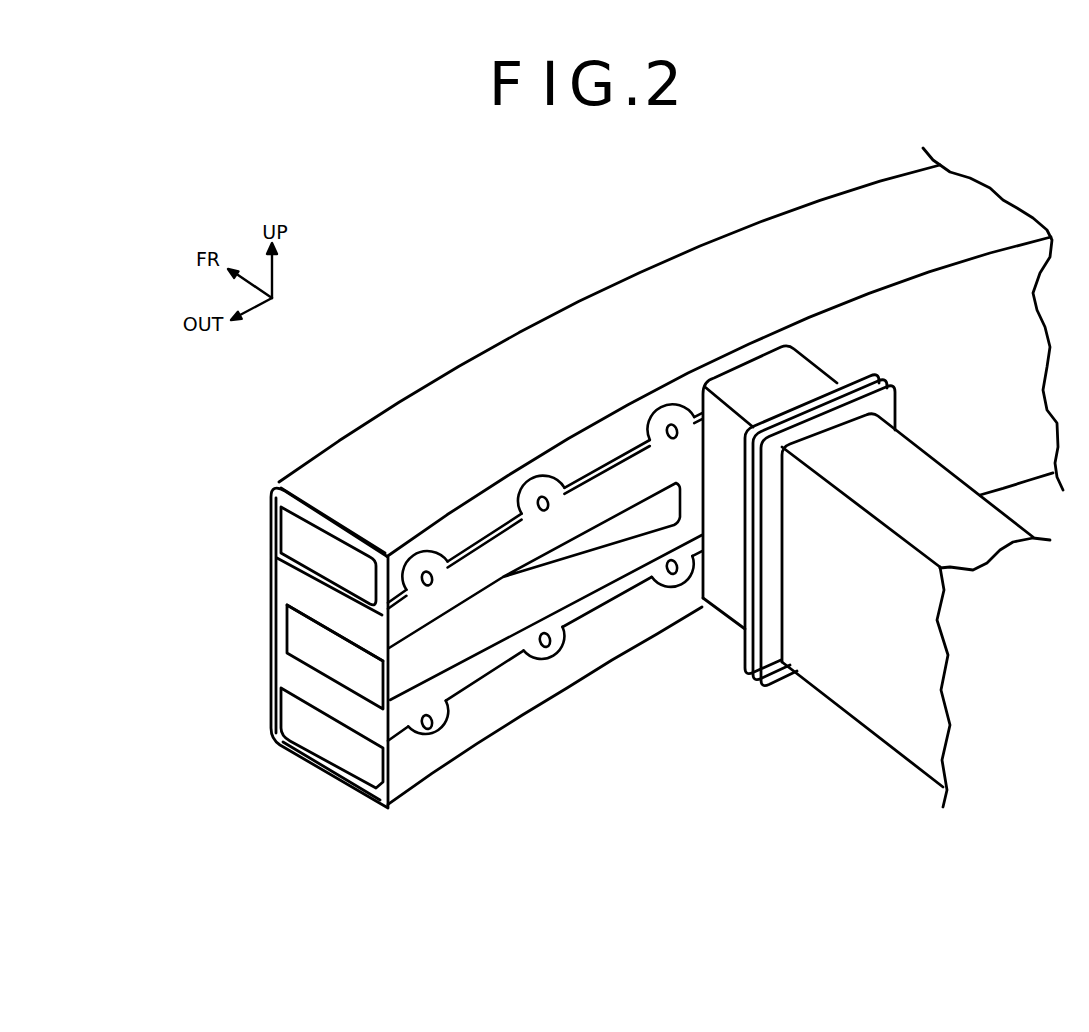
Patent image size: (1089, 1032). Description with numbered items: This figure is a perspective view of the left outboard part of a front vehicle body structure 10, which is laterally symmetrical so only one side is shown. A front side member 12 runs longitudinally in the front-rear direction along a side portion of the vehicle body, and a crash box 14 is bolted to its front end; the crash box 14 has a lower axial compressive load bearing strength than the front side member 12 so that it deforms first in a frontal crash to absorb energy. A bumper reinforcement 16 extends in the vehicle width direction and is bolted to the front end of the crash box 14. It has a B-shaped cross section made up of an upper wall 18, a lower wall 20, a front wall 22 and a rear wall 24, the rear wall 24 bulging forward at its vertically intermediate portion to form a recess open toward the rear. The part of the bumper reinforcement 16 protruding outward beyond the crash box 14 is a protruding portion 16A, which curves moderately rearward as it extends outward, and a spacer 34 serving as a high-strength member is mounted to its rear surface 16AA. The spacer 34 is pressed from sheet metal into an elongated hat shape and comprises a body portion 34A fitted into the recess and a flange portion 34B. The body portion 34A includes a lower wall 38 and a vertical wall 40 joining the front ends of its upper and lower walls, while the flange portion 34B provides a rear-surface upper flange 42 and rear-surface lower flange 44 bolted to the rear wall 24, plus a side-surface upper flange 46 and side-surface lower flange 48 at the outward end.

The front vehicle body structure 10 is at (499, 213).
The front side member 12 is at (858, 716).
The crash box 14 is at (940, 465).
The bumper reinforcement 16 is at (802, 206).
The protruding portion 16A is at (447, 365).
The rear surface 16AA is at (540, 687).
The upper wall 18 is at (685, 272).
The lower wall 20 is at (357, 792).
The front wall 22 is at (270, 497).
The rear wall 24 is at (447, 747).
The spacer 34 is at (158, 623).
The body portion 34A is at (338, 651).
The flange portion 34B is at (326, 687).
The lower wall 38 is at (450, 631).
The vertical wall 40 is at (610, 527).
The rear-surface upper flange 42 is at (610, 485).
The rear-surface lower flange 44 is at (577, 593).
The side-surface upper flange 46 is at (322, 597).
The side-surface lower flange 48 is at (334, 703).